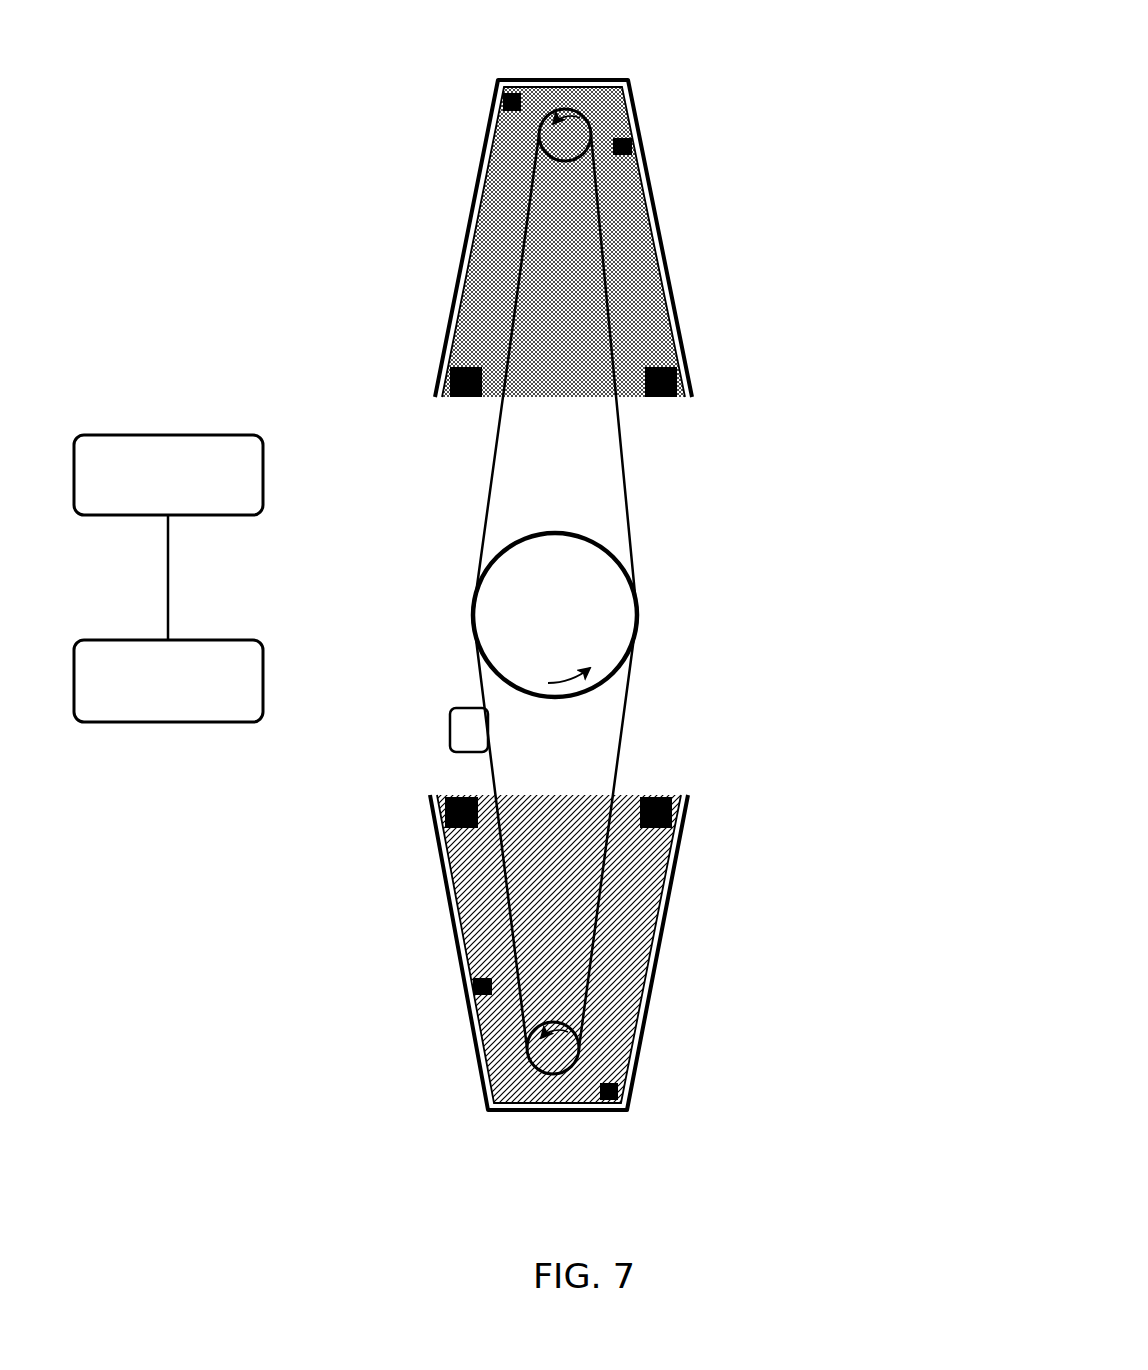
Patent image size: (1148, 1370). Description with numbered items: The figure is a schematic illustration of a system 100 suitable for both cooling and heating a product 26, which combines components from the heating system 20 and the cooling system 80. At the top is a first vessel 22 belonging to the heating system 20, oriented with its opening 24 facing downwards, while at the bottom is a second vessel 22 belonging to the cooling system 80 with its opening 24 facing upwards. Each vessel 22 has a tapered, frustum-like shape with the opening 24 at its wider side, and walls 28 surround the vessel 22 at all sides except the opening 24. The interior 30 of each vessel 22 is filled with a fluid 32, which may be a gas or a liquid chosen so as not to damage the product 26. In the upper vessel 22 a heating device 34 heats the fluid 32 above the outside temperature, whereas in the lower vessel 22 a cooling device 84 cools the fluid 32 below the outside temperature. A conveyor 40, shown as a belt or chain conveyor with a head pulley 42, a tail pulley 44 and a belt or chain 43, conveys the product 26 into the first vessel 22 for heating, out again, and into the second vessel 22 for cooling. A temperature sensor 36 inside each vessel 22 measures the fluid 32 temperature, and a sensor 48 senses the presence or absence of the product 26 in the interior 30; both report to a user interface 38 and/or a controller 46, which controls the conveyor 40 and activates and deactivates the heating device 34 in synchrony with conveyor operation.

The system 100 is at (190, 145).
The system 20 is at (650, 588).
The vessel 22 is at (695, 112).
The opening 24 is at (470, 420).
The product 26 is at (452, 725).
The walls 28 is at (472, 210).
The interior 30 is at (565, 342).
The fluid 32 is at (634, 290).
The heating device 34 is at (452, 398).
The temperature sensor 36 is at (498, 86).
The user interface 38 is at (88, 502).
The conveyor 40 is at (624, 595).
The head pulley 42 is at (568, 634).
The belt or chain 43 is at (500, 458).
The tail pulley 44 is at (580, 130).
The controller 46 is at (88, 708).
The sensor 48 is at (633, 145).
The system 80 is at (565, 842).
The cooling device 84 is at (445, 812).